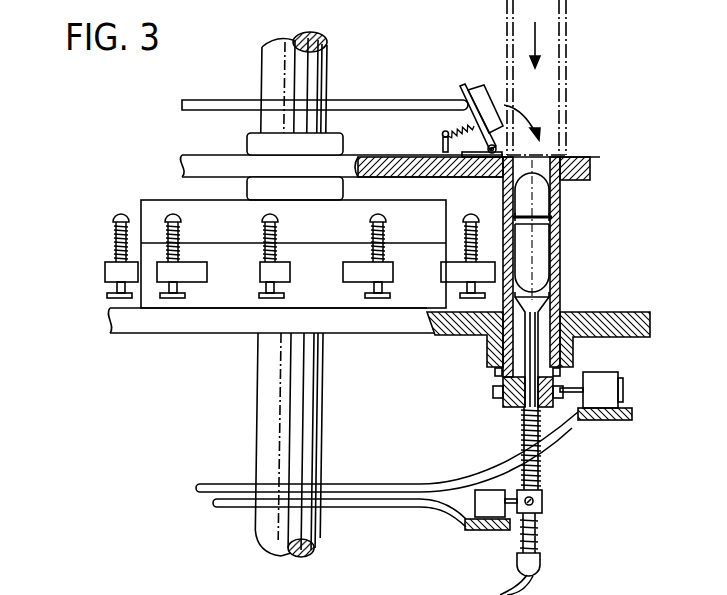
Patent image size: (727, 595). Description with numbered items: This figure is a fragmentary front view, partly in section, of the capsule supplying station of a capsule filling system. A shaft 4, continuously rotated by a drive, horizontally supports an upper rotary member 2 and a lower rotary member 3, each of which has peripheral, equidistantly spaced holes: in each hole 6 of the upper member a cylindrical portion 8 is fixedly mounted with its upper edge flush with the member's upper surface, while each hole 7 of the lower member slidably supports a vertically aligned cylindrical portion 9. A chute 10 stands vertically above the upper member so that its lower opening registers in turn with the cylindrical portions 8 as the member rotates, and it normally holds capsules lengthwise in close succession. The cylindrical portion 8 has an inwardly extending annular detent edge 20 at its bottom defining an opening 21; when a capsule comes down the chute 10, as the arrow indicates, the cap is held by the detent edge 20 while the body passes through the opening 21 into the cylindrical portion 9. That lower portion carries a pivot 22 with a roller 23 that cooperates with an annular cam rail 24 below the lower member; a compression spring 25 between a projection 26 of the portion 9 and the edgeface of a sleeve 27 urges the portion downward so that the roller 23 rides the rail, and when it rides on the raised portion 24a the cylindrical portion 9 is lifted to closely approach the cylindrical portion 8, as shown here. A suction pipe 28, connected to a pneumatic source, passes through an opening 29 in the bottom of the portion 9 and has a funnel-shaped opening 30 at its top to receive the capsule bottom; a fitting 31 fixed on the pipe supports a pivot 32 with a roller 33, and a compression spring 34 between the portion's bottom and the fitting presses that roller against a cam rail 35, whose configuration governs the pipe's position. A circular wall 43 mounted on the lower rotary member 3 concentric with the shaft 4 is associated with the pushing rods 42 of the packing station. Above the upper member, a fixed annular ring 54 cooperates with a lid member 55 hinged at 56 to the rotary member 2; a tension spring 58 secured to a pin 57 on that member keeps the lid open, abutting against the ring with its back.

The upper rotary member 2 is at (207, 160).
The lower rotary member 3 is at (157, 333).
The shaft 4 is at (278, 44).
The hole 6 is at (566, 160).
The hole 7 is at (570, 313).
The cylindrical portion 8 is at (562, 192).
The cylindrical portion 9 is at (562, 272).
The chute 10 is at (563, 33).
The detent edge 20 is at (522, 223).
The opening 21 is at (562, 250).
The pivot 22 is at (566, 386).
The roller 23 is at (612, 372).
The cam rail 24 is at (634, 415).
The raised portion 24a is at (545, 433).
The compression spring 25 is at (495, 378).
The projection 26 is at (494, 393).
The sleeve 27 is at (487, 351).
The suction pipe 28 is at (540, 465).
The opening 29 is at (520, 410).
The opening 30 is at (548, 299).
The fitting 31 is at (542, 502).
The pivot 32 is at (518, 522).
The roller 33 is at (484, 530).
The compression spring 34 is at (520, 442).
The cam rail 35 is at (378, 507).
The pushing rod 42 is at (113, 232).
The circular wall 43 is at (141, 200).
The annular ring 54 is at (392, 105).
The lid member 55 is at (462, 86).
The hinge 56 is at (490, 152).
The pin 57 is at (440, 146).
The tension spring 58 is at (452, 133).